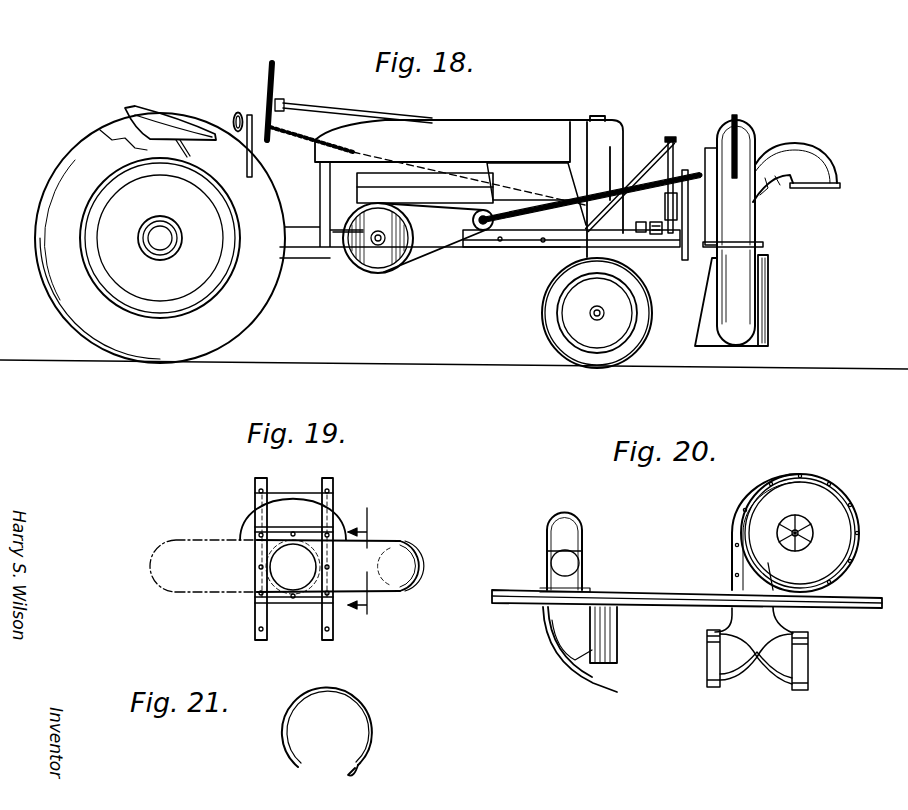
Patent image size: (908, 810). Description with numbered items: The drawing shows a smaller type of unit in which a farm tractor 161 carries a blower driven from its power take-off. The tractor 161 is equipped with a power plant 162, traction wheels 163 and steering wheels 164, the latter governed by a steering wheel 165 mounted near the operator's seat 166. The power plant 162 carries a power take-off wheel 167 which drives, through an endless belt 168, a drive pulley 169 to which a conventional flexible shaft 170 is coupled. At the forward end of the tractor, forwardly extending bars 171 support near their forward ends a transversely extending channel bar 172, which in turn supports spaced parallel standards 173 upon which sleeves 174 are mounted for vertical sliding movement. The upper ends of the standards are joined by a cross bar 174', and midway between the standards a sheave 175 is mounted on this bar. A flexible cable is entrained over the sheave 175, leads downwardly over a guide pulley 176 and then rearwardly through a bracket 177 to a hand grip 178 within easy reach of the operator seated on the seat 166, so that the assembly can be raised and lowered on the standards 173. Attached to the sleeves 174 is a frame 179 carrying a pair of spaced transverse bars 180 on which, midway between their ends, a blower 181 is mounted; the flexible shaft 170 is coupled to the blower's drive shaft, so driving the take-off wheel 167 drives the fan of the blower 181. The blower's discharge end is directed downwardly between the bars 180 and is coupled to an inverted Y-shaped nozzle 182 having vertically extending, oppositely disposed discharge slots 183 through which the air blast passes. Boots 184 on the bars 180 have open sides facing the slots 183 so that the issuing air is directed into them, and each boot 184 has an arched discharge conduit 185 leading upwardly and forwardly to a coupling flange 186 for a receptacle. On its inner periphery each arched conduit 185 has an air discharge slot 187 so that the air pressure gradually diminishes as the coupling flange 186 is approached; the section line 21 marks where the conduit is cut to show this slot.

In FIG. 18, the farm tractor 161 is at (515, 122).
In FIG. 18, the power plant 162 is at (427, 182).
In FIG. 18, the traction wheels 163 is at (247, 307).
In FIG. 18, the steering wheels 164 is at (542, 318).
In FIG. 18, the steering wheel 165 is at (276, 76).
In FIG. 18, the operator's seat 166 is at (172, 132).
In FIG. 18, the power take-off wheel 167 is at (380, 253).
In FIG. 18, the endless belt 168 is at (438, 253).
In FIG. 18, the drive pulley 169 is at (472, 219).
In FIG. 18, the flexible shaft 170 is at (537, 200).
In FIG. 18, the forwardly extending bars 171 is at (652, 236).
In FIG. 18, the channel bar 172 is at (683, 262).
In FIG. 18, the standards 173 is at (668, 140).
In FIG. 18, the sleeves 174 is at (652, 206).
In FIG. 18, the cross bar 174' is at (689, 167).
In FIG. 18, the sheave 175 is at (663, 172).
In FIG. 18, the guide pulley 176 is at (640, 232).
In FIG. 18, the bracket 177 is at (252, 153).
In FIG. 18, the hand grip 178 is at (238, 112).
In FIG. 18, the frame 179 is at (690, 223).
In FIG. 18, the transverse bars 180 is at (760, 250).
In FIG. 20, the transverse bars 180 is at (665, 590).
In FIG. 18, the blower 181 is at (753, 140).
In FIG. 20, the blower 181 is at (817, 493).
In FIG. 20, the inverted Y-shaped nozzle 182 is at (805, 530).
In FIG. 20, the discharge slots 183 is at (707, 652).
In FIG. 18, the boots 184 is at (743, 323).
In FIG. 19, the boots 184 is at (293, 502).
In FIG. 20, the boots 184 is at (577, 677).
In FIG. 18, the arched discharge conduit 185 is at (790, 155).
In FIG. 19, the arched discharge conduit 185 is at (390, 547).
In FIG. 20, the arched discharge conduit 185 is at (580, 523).
In FIG. 21, the arched discharge conduit 185 is at (353, 700).
In FIG. 18, the coupling flange 186 is at (820, 188).
In FIG. 19, the coupling flange 186 is at (420, 590).
In FIG. 21, the air discharge slot 187 is at (360, 772).
In FIG. 19, the section line 21- 21 is at (362, 569).